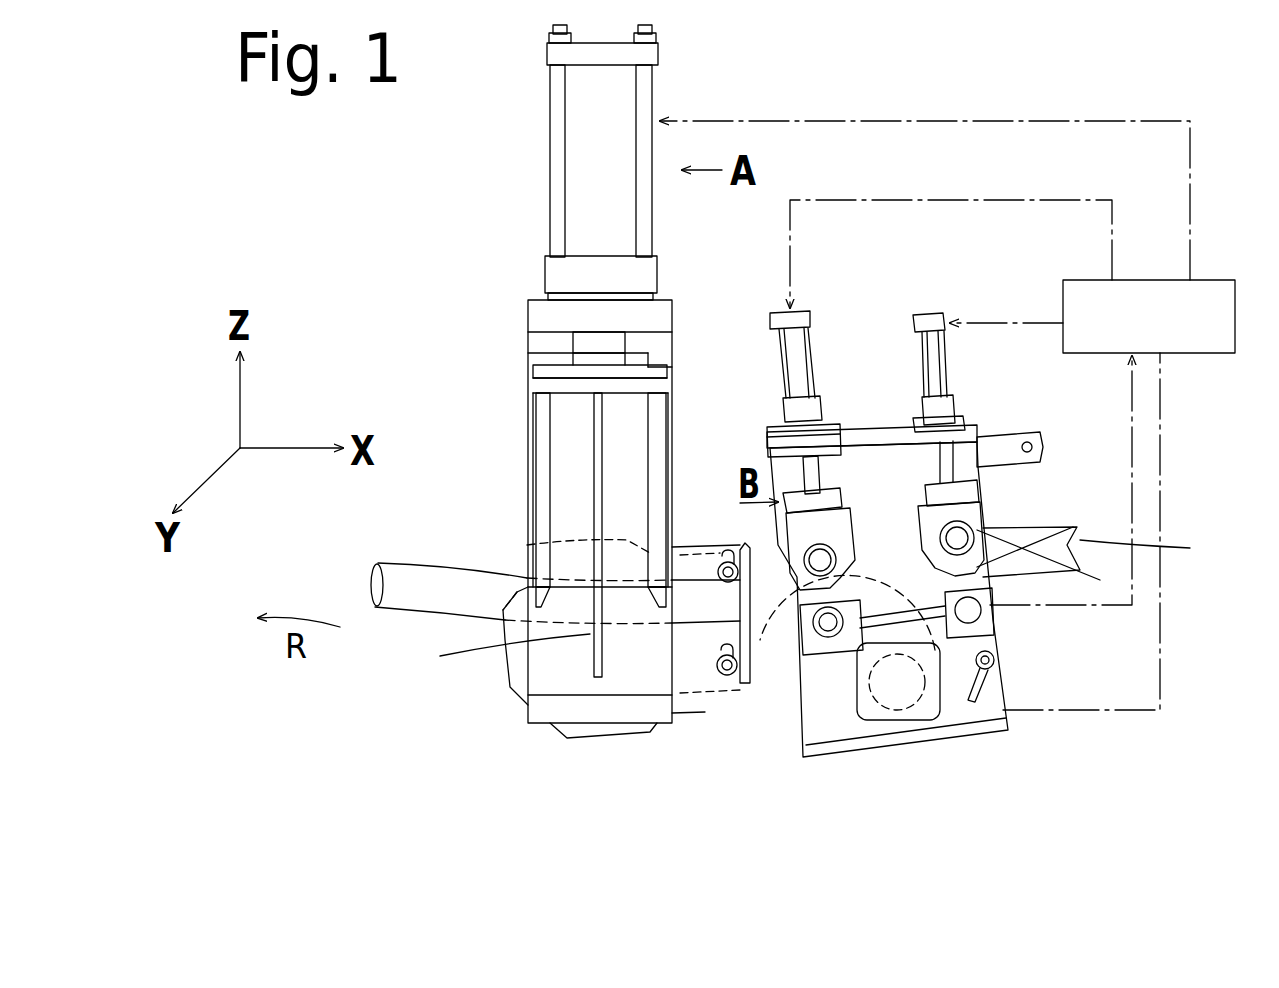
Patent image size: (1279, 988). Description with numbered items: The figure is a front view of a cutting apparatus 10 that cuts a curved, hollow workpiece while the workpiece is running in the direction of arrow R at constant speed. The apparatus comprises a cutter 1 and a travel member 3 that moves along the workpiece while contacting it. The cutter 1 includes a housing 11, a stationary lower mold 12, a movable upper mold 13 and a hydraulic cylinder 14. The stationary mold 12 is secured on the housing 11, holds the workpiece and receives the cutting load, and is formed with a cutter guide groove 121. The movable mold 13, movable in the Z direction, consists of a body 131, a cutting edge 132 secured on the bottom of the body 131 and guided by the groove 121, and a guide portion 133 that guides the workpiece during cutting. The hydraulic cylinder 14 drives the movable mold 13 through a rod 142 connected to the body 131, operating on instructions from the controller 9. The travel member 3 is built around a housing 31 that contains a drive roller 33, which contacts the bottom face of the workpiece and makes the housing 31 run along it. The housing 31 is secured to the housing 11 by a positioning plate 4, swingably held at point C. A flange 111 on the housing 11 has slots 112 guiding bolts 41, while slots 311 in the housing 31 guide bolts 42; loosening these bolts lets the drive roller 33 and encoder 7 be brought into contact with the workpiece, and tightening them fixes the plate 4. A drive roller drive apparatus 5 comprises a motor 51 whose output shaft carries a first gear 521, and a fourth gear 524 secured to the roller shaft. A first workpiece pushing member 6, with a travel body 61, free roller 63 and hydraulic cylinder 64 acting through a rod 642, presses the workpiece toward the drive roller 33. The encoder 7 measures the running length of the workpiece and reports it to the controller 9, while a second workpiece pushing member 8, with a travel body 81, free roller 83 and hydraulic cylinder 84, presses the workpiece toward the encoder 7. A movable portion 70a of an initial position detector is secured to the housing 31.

The cutter 1 is at (515, 360).
The travel member 3 is at (895, 440).
The positioning plate 4 is at (755, 685).
The drive roller drive apparatus 5 is at (897, 755).
The first workpiece pushing member 6 is at (826, 485).
The encoder 7 is at (1000, 630).
The second workpiece pushing member 8 is at (962, 452).
The controller 9 is at (1218, 280).
The cutting apparatus 10 is at (860, 112).
The housing 11 is at (672, 325).
The stationary lower mold 12 is at (540, 660).
The movable upper mold 13 is at (562, 375).
The hydraulic cylinder 14 is at (662, 90).
The housing 31 is at (897, 450).
The drive roller 33 is at (822, 638).
The bolts 41 is at (728, 560).
The bolts 42 is at (1000, 670).
The motor 51 is at (876, 725).
The travel body 61 is at (800, 478).
The free roller 63 is at (800, 522).
The hydraulic cylinder 64 is at (808, 306).
The movable portion 70a is at (1003, 440).
The travel body 81 is at (985, 488).
The free roller 83 is at (933, 530).
The hydraulic cylinder 84 is at (940, 312).
The flange 111 is at (680, 512).
The slots 112 is at (712, 552).
The cutter guide groove 121 is at (598, 655).
The body 131 is at (613, 378).
The cutting edge 132 is at (594, 478).
The guide portion 133 is at (543, 410).
The rod 142 is at (590, 340).
The slots 311 is at (985, 705).
The first gear 521 is at (908, 712).
The fourth gear 524 is at (828, 720).
The rod 642 is at (790, 400).